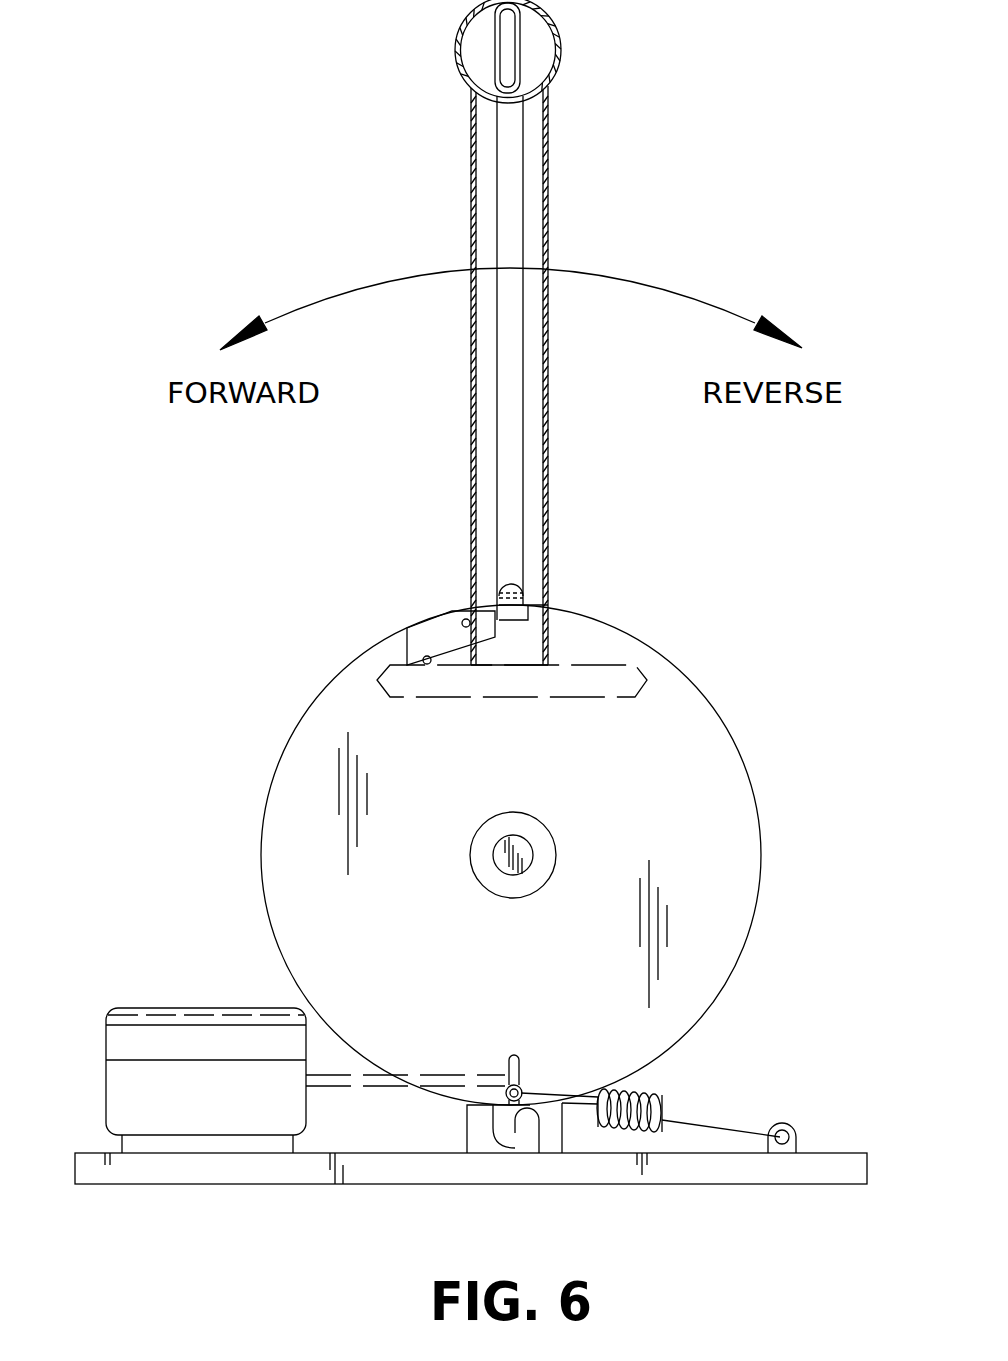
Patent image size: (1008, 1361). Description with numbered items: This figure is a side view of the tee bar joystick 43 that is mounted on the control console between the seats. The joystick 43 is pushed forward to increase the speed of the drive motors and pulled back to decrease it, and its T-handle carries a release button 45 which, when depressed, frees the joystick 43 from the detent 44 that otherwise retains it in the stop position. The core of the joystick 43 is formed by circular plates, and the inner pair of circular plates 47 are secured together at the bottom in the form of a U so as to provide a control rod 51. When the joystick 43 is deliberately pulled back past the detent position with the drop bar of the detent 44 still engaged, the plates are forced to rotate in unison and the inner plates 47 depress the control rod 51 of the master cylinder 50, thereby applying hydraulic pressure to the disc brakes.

The tee bar joystick 43 is at (471, 213).
The detent 44 is at (510, 614).
The release button 45 is at (507, 43).
The circular plate 47 is at (680, 714).
The master cylinder 50 is at (212, 1008).
The control rod 51 is at (355, 1076).